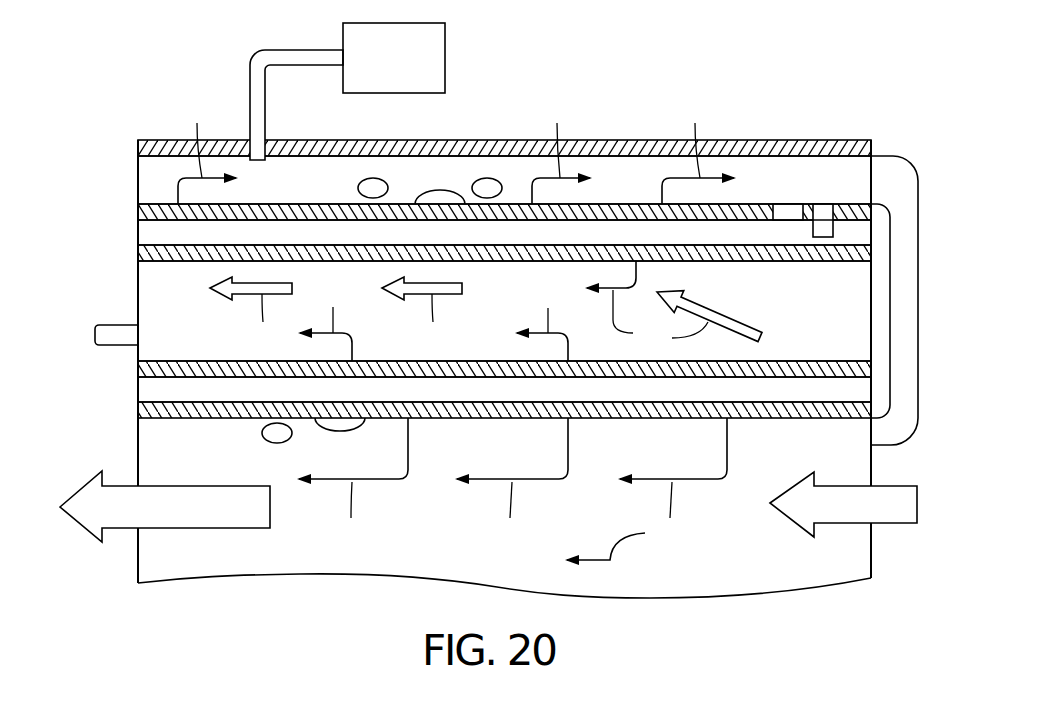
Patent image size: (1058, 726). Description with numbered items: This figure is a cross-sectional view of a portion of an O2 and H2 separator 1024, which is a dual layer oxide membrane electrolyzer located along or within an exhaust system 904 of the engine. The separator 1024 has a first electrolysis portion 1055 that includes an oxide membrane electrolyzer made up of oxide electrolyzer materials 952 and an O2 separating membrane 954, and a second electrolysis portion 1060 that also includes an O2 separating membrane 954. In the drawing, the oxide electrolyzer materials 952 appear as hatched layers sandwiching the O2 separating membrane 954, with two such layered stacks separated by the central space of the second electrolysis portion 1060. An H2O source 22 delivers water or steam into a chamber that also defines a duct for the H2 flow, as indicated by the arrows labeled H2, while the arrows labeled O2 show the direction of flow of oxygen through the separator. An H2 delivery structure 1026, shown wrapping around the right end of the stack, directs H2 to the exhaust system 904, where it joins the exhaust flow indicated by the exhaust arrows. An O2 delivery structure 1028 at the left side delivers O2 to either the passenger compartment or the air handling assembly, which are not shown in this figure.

The H2O source 22 is at (446, 47).
The O2 and H2 separator 1024 is at (503, 321).
The exhaust system 904 is at (800, 137).
The H2 delivery structure 1026 is at (918, 172).
The first electrolysis portion 1055 is at (162, 203).
The oxide electrolyzer materials 952 is at (152, 212).
The O2 separating membrane 954 is at (152, 232).
The O2 delivery structure 1028 is at (125, 322).
The second electrolysis portion 1060 is at (800, 360).